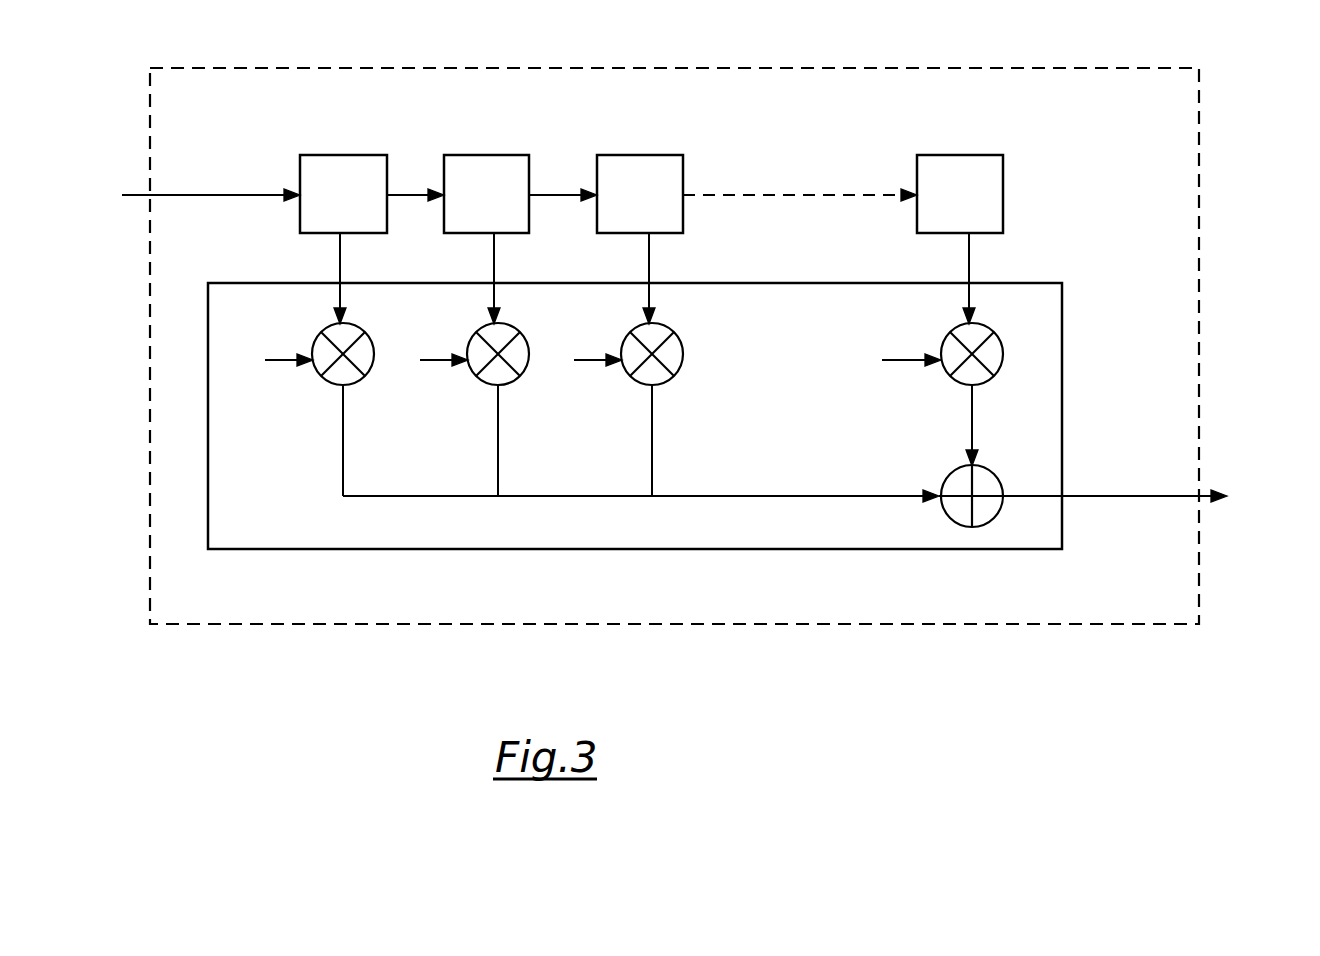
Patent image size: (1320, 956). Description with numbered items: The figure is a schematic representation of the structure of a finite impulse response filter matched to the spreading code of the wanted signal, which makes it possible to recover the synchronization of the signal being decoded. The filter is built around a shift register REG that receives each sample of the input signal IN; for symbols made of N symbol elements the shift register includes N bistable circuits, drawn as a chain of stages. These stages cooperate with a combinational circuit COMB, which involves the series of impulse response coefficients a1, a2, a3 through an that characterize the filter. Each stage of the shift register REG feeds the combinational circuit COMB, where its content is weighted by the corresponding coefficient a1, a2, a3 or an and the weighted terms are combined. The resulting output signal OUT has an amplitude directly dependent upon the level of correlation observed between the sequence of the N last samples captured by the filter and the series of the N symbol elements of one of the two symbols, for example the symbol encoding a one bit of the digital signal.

The shift register REG is at (666, 126).
The input signal IN is at (189, 207).
The combinational circuit COMB is at (1063, 418).
The impulse response coefficient a1 is at (279, 362).
The impulse response coefficient a2 is at (434, 362).
The impulse response coefficient a3 is at (588, 362).
The impulse response coefficient an is at (896, 362).
The output signal OUT is at (1113, 504).